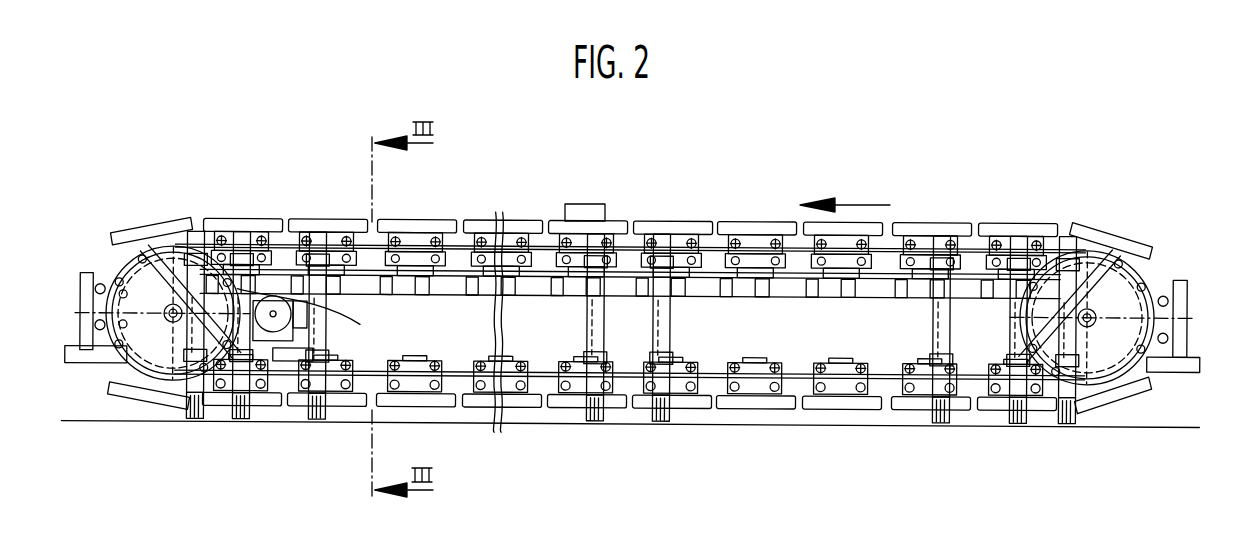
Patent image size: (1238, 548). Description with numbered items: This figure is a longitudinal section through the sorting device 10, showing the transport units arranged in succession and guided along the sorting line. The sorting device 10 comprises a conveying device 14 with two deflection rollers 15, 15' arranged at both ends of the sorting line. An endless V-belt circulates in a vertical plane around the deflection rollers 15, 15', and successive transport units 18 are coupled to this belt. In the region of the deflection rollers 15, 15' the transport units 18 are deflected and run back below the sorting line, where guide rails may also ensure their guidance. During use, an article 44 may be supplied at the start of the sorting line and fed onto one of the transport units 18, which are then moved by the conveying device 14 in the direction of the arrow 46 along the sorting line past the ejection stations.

The sorting device 10 is at (682, 220).
The conveying device 14 is at (535, 368).
The deflection roller 15 is at (1104, 311).
The deflection roller 15' is at (157, 284).
The transport unit 18 is at (432, 222).
The article 44 is at (582, 208).
The arrow 46 is at (855, 205).